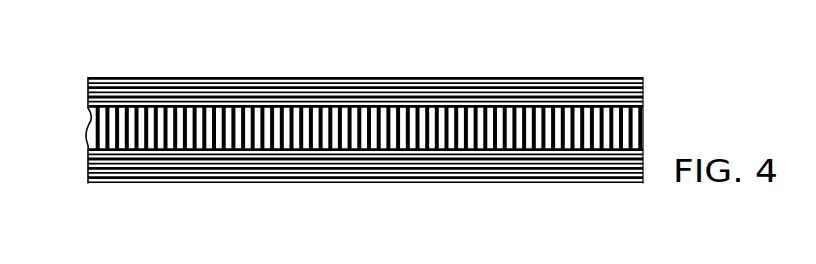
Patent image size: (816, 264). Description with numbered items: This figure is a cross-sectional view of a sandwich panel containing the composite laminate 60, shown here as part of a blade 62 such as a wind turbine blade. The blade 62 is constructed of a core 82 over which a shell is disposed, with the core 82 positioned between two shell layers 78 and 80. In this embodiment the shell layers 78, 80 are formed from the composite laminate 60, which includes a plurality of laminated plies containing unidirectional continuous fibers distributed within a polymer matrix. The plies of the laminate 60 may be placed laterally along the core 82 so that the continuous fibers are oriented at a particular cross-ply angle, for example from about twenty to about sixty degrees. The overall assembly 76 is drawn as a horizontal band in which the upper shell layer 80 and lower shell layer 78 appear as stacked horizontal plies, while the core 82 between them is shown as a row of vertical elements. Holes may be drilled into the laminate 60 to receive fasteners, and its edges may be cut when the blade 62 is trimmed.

The laminated composite panel 76 is at (667, 78).
The composite laminate 60 is at (573, 80).
The blade 62 is at (215, 63).
The shell layer 80 is at (70, 85).
The core 82 is at (118, 129).
The shell layer 78 is at (75, 165).